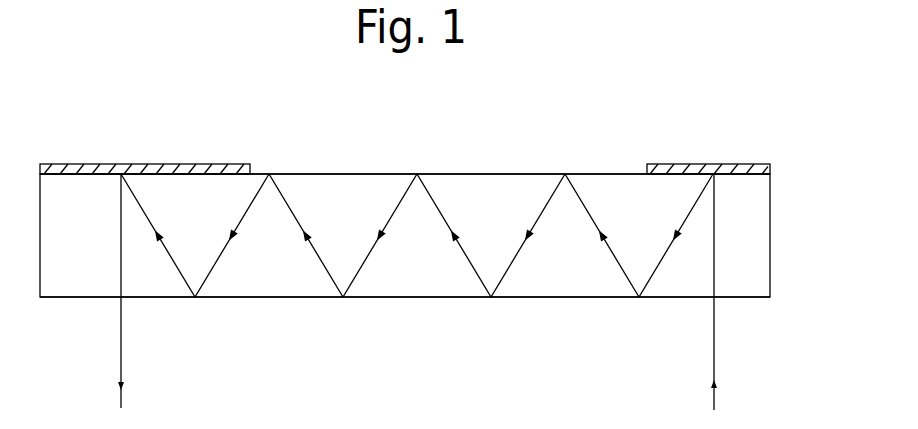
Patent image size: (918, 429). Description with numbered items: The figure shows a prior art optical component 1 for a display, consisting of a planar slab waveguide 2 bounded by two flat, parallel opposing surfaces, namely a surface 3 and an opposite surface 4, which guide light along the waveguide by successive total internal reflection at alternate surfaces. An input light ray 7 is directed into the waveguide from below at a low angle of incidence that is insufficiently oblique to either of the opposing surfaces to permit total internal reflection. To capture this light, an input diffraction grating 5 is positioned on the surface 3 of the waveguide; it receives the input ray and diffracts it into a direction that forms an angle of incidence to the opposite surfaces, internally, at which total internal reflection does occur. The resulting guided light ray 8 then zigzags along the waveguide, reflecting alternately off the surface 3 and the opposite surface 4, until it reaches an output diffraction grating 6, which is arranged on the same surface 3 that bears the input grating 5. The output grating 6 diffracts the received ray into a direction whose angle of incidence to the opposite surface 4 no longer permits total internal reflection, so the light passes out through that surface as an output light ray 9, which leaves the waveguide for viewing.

The optical device 1 is at (668, 90).
The planar waveguide 2 is at (584, 298).
The surface 3 is at (495, 174).
The opposite surface 4 is at (453, 298).
The input diffraction grating 5 is at (737, 164).
The output diffraction grating 6 is at (150, 168).
The input light ray 7 is at (716, 345).
The light ray 8 is at (578, 192).
The output light ray 9 is at (119, 352).